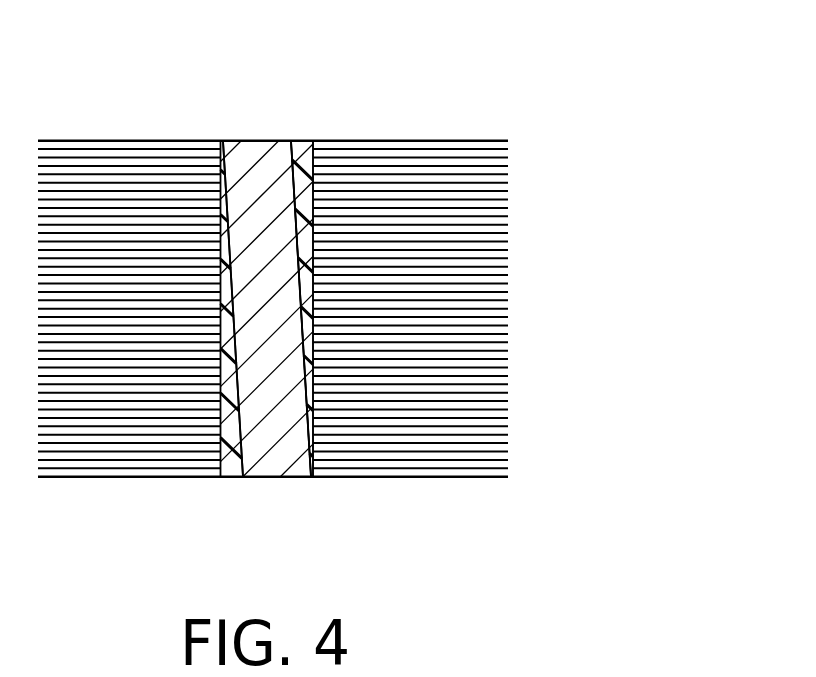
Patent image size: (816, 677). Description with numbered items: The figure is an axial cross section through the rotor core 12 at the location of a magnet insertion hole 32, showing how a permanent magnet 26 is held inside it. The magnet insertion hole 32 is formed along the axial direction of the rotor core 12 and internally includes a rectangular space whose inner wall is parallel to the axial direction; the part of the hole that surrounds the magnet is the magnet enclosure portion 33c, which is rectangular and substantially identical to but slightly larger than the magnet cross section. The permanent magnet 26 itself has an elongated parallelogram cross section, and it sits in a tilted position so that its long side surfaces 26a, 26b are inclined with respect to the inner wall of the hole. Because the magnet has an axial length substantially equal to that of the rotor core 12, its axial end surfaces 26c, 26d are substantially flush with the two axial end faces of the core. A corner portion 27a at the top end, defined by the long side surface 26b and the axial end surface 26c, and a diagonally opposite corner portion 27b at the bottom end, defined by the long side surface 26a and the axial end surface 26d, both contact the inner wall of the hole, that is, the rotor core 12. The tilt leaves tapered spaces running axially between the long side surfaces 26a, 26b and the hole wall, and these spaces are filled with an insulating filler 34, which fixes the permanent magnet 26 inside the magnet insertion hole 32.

The rotor core 12 is at (474, 141).
The permanent magnet 26 is at (242, 140).
The long side surface 26a is at (302, 147).
The long side surface 26b is at (241, 465).
The axial end surface 26c is at (263, 141).
The axial end surface 26d is at (274, 478).
The corner portion 27a is at (220, 140).
The corner portion 27b is at (314, 479).
The magnet insertion hole 32 is at (349, 270).
The magnet enclosure portion 33c is at (301, 199).
The insulating filler 34 is at (299, 146).